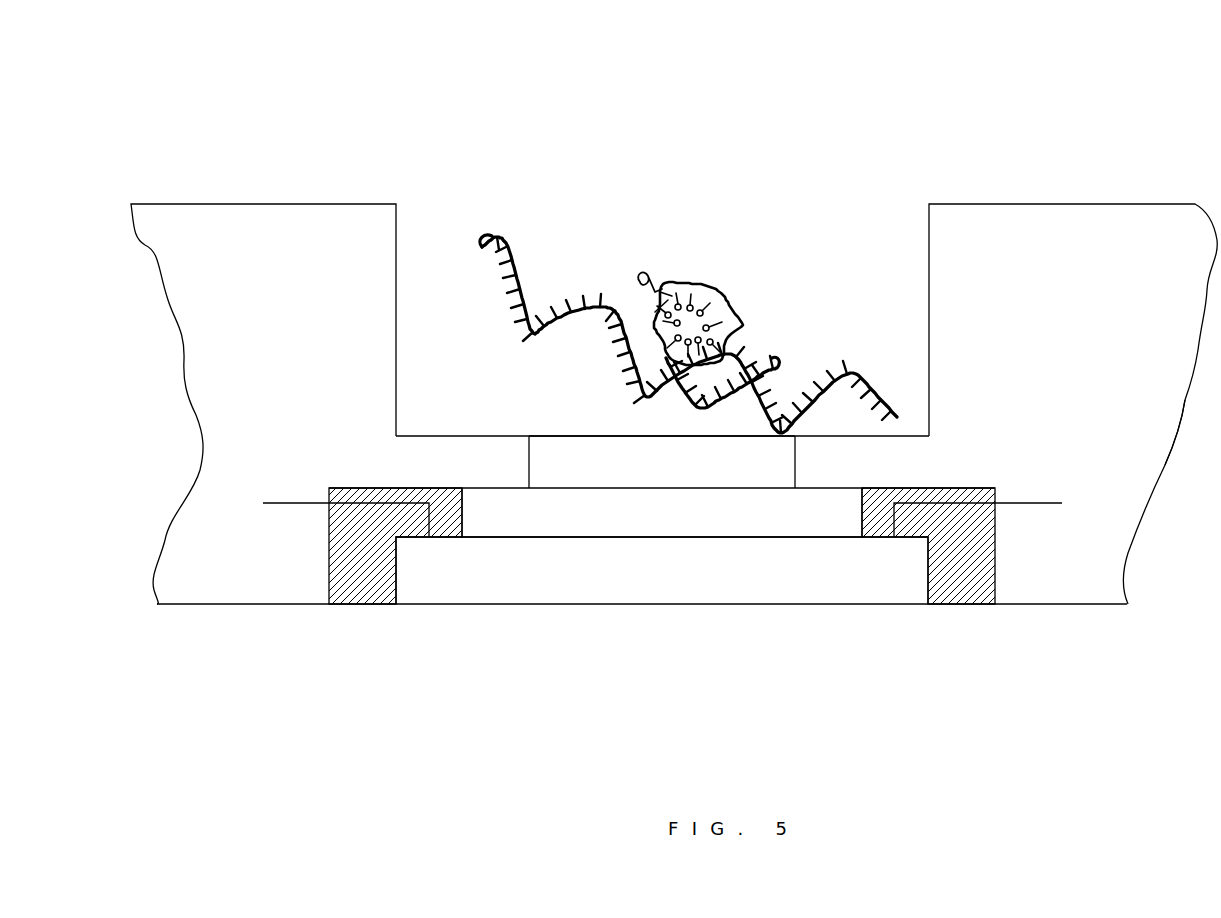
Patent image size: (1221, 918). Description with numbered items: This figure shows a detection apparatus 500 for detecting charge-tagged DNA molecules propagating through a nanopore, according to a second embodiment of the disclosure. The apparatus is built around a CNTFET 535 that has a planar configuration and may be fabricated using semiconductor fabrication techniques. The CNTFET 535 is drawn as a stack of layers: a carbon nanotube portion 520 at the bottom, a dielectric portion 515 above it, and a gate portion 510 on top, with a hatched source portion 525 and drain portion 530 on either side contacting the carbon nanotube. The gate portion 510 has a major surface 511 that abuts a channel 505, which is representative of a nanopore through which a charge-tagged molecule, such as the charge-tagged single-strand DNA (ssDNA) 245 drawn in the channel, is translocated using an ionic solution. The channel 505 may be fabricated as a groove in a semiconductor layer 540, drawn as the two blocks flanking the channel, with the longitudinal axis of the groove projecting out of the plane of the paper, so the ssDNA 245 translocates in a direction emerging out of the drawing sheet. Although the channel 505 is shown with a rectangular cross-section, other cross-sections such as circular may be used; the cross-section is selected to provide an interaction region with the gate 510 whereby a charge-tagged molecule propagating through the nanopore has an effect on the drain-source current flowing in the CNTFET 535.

The detection apparatus 500 is at (229, 103).
The channel 505 is at (795, 178).
The charge-tagged single-strand DNA (ssDNA) 245 is at (802, 312).
The gate portion 510 is at (733, 468).
The major surface 511 is at (578, 434).
The dielectric portion 515 is at (778, 519).
The carbon nanotube portion 520 is at (823, 576).
The source portion 525 is at (370, 488).
The drain portion 530 is at (930, 488).
The CNTFET 535 is at (1080, 472).
The semiconductor layer 540 is at (298, 266).